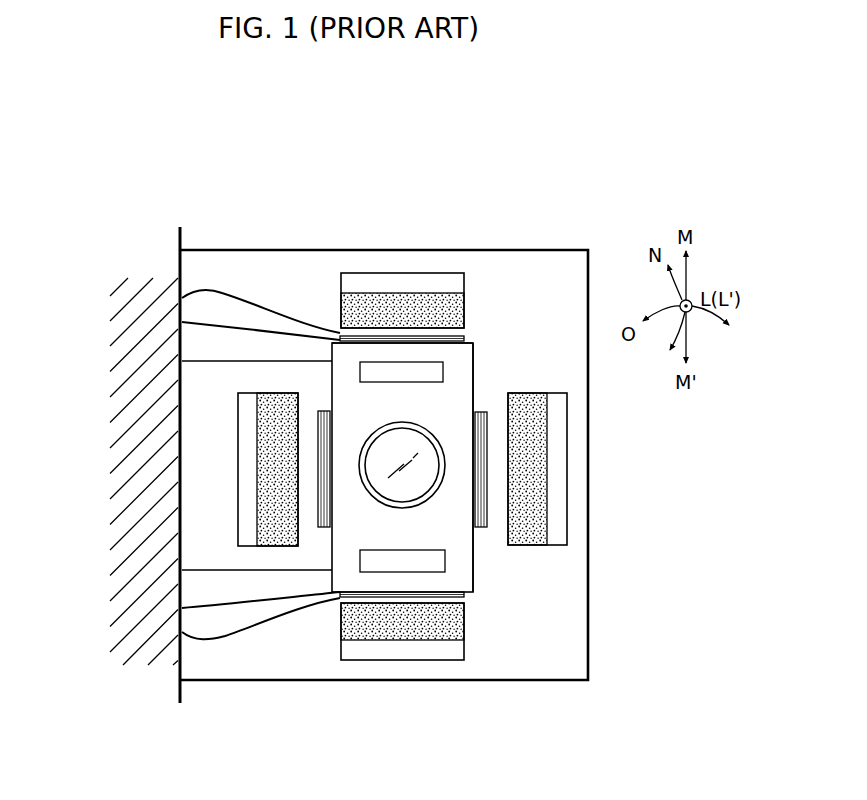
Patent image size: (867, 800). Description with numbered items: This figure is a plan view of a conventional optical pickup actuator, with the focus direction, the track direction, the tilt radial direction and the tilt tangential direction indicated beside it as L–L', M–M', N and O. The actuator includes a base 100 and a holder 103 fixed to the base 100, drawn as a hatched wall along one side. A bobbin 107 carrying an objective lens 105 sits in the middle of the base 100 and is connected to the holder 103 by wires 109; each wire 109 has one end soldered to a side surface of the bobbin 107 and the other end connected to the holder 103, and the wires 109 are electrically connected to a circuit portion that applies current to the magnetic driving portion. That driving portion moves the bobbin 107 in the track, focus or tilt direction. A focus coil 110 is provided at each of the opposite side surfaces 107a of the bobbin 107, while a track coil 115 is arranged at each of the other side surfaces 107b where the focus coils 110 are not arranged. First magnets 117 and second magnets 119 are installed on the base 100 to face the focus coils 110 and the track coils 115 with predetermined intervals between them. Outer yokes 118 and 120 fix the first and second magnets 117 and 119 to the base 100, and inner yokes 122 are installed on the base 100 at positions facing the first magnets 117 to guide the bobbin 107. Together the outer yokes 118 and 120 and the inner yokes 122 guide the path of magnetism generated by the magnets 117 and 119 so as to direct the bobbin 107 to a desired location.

The base 100 is at (385, 250).
The holder 103 is at (127, 308).
The objective lens 105 is at (424, 486).
The bobbin 107 is at (463, 562).
The opposite side surfaces of the bobbin 107a is at (473, 343).
The other side surfaces of the bobbin 107b is at (473, 390).
The wires 109 is at (262, 597).
The focus coil 110 is at (467, 337).
The track coil 115 is at (487, 433).
The first magnets 117 is at (341, 302).
The outer yokes 118 is at (446, 273).
The second magnets 119 is at (277, 460).
The outer yokes 120 is at (247, 510).
The inner yokes 122 is at (443, 372).